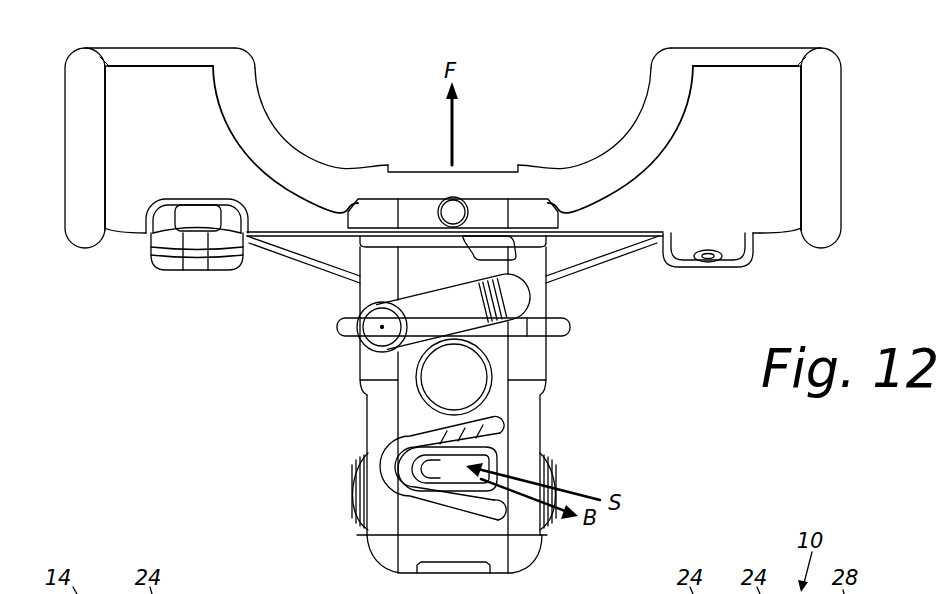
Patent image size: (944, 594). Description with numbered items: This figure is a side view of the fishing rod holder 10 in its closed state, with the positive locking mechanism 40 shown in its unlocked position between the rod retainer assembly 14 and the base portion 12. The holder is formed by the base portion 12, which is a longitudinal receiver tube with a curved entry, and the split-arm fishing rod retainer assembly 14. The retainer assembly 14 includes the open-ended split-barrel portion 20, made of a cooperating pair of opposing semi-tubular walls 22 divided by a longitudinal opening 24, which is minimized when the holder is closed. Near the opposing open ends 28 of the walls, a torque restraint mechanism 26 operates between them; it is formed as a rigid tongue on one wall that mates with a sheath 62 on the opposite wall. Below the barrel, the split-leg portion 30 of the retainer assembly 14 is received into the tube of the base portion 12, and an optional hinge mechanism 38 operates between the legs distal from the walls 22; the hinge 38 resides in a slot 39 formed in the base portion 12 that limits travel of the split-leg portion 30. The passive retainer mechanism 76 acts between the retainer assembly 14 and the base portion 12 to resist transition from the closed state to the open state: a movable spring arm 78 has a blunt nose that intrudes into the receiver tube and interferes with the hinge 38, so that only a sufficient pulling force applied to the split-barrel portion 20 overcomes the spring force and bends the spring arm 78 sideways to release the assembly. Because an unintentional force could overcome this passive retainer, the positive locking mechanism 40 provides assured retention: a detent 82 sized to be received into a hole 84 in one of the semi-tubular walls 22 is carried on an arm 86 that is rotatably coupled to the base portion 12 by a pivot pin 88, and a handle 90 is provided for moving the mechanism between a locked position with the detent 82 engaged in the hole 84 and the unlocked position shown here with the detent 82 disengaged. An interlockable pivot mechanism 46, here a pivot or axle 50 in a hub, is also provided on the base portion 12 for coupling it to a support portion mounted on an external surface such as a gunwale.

The fishing rod holder 10 is at (373, 80).
The base portion 12 is at (357, 542).
The split-arm fishing rod retainer assembly 14 is at (88, 46).
The split-barrel portion 20 is at (258, 103).
The semi-tubular walls 22 is at (733, 147).
The longitudinal opening 24 is at (156, 47).
The torque restraint mechanism 26 is at (163, 268).
The open ends 28 is at (838, 54).
The split-leg portion 30 is at (318, 256).
The hinge mechanism 38 is at (343, 488).
The slot 39 is at (366, 423).
The positive locking mechanism 40 is at (362, 342).
The interlockable pivot mechanism 46 is at (492, 388).
The pivot or axle 50 is at (444, 387).
The sheath 62 is at (198, 218).
The passive retainer mechanism 76 is at (388, 456).
The movable spring arm 78 is at (465, 442).
The detent 82 is at (530, 292).
The hole 84 is at (445, 196).
The arm 86 is at (437, 322).
The pivot pin 88 is at (360, 313).
The handle 90 is at (516, 303).